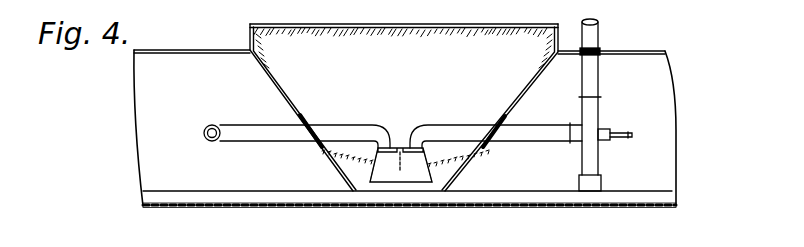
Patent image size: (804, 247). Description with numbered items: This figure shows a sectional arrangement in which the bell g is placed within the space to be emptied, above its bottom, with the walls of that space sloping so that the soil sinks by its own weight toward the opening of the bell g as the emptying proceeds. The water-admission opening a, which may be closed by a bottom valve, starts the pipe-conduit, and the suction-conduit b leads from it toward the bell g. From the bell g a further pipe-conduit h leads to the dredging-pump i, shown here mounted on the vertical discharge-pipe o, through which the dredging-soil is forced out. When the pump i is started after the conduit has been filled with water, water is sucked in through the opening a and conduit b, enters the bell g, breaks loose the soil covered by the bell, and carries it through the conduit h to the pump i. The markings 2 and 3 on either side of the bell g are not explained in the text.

The water-admission opening a is at (206, 140).
The suction-conduit b is at (246, 138).
The pipe-conduit h is at (515, 130).
The bell g is at (388, 176).
The left side of nozzle 2 is at (365, 170).
The right side of nozzle 3 is at (434, 170).
The discharge-pipe o is at (600, 31).
The dredging-pump i is at (596, 112).